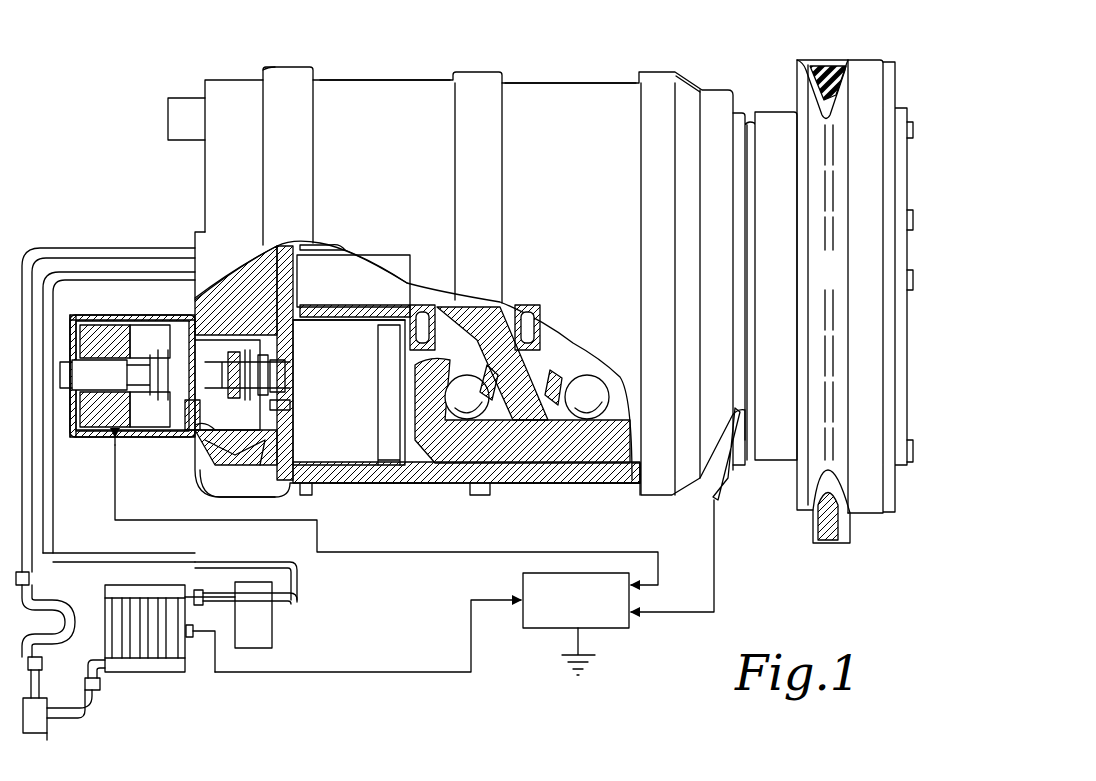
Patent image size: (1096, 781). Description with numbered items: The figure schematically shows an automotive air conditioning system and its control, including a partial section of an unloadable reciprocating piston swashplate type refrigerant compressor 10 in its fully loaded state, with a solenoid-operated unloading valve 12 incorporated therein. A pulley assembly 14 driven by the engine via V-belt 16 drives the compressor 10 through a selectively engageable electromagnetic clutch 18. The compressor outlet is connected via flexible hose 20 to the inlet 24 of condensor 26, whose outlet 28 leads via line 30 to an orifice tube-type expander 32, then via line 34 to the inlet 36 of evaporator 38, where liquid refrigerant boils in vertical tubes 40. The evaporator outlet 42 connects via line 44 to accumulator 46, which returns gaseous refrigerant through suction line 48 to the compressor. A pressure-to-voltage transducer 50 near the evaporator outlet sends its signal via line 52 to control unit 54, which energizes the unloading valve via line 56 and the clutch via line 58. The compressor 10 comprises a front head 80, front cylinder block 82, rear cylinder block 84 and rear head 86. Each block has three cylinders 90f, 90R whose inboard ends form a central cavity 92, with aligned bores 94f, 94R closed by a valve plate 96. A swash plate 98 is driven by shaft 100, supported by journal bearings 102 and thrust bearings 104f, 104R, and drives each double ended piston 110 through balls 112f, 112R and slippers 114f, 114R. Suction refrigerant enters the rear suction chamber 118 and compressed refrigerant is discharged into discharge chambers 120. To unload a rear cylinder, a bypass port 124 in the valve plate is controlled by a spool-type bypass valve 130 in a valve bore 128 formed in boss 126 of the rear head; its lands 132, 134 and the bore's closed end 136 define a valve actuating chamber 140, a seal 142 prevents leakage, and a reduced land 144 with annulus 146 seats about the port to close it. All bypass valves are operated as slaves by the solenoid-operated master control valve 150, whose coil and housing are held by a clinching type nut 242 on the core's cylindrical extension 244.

The refrigerant compressor 10 is at (450, 62).
The solenoid-operated unloading valve 12 is at (150, 222).
The pulley assembly 14 is at (860, 540).
The V-belt 16 is at (826, 66).
The electromagnetic clutch 18 is at (768, 468).
The flexible hose 20 is at (33, 503).
The condensor inlet 24 is at (30, 578).
The condensor 26 is at (60, 615).
The condensor outlet 28 is at (42, 665).
The line 30 is at (42, 718).
The orifice tube-type expander 32 is at (45, 740).
The line 34 is at (95, 712).
The evaporator inlet 36 is at (96, 688).
The evaporator 38 is at (152, 584).
The tubes 40 is at (165, 650).
The evaporator outlet 42 is at (198, 589).
The line 44 is at (220, 596).
The accumulator 46 is at (272, 622).
The suction line 48 is at (50, 520).
The pressure-to-voltage transducer 50 is at (192, 640).
The line 52 is at (382, 672).
The control unit 54 is at (546, 630).
The line 56 is at (408, 553).
The line 58 is at (722, 572).
The front head 80 is at (700, 78).
The front cylinder block 82 is at (588, 86).
The rear cylinder block 84 is at (374, 80).
The rear head 86 is at (233, 78).
The rear cylinder 90R is at (440, 486).
The front cylinder 90f is at (590, 484).
The central cavity 92 is at (458, 470).
The rear cylinder bore 94R is at (378, 485).
The front cylinder bore 94f is at (648, 488).
The valve plate 96 is at (284, 258).
The swash plate 98 is at (492, 312).
The shaft 100 is at (386, 278).
The antifriction journal bearings 102 is at (348, 246).
The rear antifriction thrust bearing 104R is at (432, 312).
The front antifriction thrust bearing 104f is at (533, 322).
The double ended piston 110 is at (470, 482).
The rear ball 112R is at (480, 440).
The front ball 112f is at (596, 388).
The rear slipper 114R is at (540, 430).
The front slipper 114f is at (560, 378).
The rear suction chamber 118 is at (292, 372).
The discharge chamber 120 is at (260, 278).
The bypass port 124 is at (292, 406).
The boss 126 is at (218, 490).
The valve bore 128 is at (232, 455).
The bypass valve 130 is at (286, 466).
The land 132 is at (182, 430).
The land 134 is at (250, 392).
The closed end 136 is at (200, 440).
The valve actuating chamber 140 is at (262, 378).
The seal 142 is at (312, 316).
The land of reduced diameter 144 is at (300, 418).
The annulus 146 is at (300, 435).
The master control valve 150 is at (118, 312).
The clinching type nut 242 is at (62, 405).
The cylindrical extension 244 is at (60, 345).